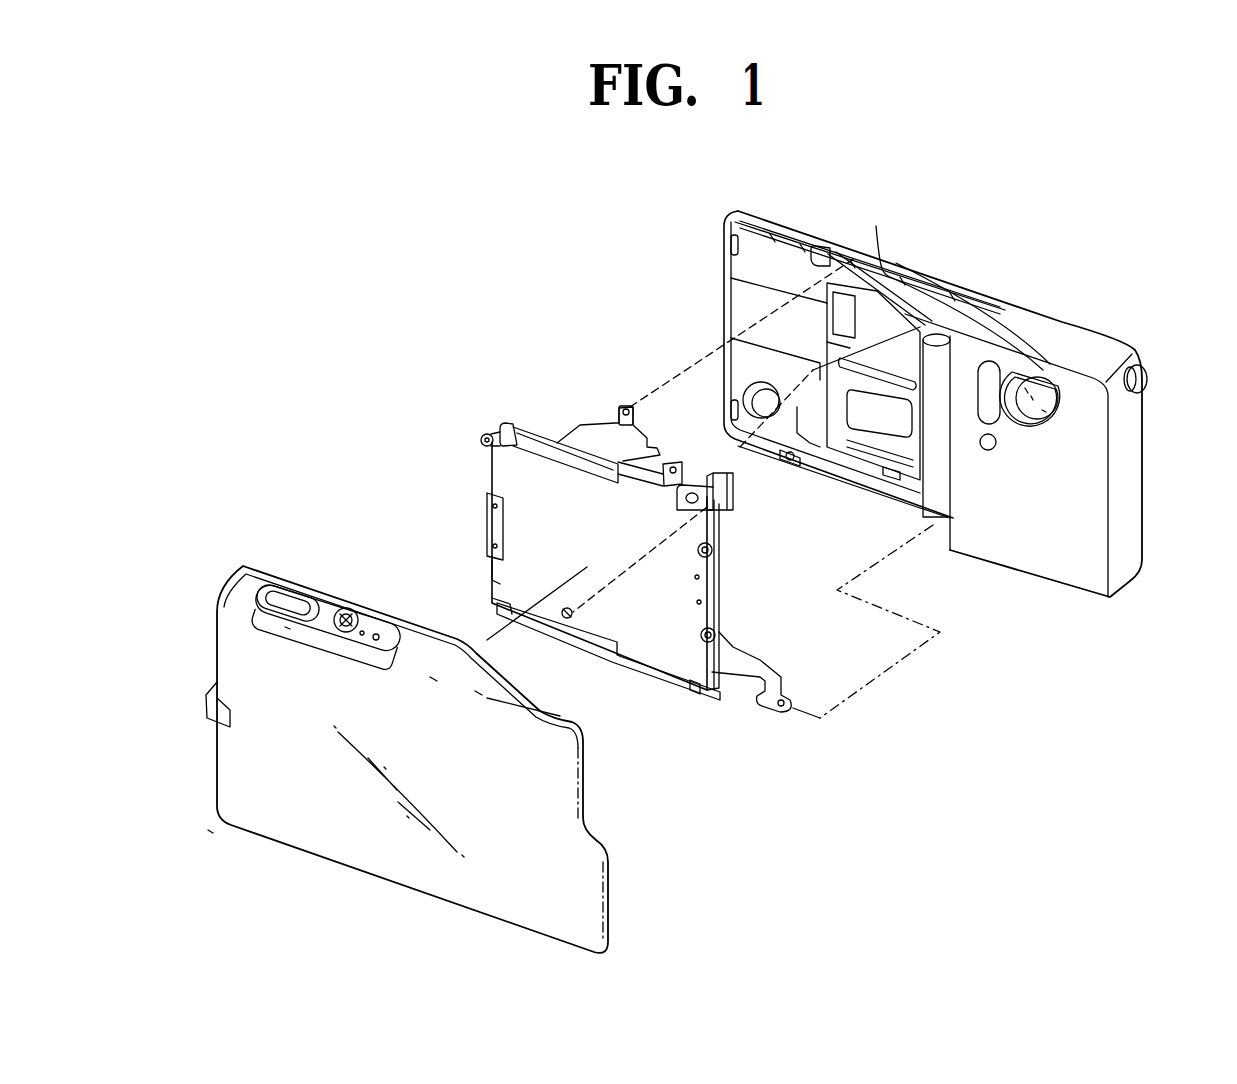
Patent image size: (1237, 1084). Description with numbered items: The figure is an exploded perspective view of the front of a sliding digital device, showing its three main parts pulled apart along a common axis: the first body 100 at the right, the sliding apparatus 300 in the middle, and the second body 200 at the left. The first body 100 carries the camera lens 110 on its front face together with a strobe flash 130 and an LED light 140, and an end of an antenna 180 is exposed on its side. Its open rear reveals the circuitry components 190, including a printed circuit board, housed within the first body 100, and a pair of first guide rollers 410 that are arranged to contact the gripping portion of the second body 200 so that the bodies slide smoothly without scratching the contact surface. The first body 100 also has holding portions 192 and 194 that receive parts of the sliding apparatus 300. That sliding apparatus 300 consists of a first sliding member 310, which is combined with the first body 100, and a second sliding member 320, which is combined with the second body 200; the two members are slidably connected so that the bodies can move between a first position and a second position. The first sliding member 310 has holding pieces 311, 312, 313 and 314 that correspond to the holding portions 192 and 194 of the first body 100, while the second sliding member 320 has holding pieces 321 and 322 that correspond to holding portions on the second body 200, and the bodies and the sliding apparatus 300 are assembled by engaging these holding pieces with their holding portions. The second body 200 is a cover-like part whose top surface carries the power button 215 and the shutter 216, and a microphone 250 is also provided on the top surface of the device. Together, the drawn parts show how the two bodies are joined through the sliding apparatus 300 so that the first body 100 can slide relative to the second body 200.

The first body 100 is at (1027, 298).
The lens 110 is at (1037, 428).
The strobe flash 130 is at (983, 398).
The LED light 140 is at (988, 451).
The antenna 180 is at (1148, 376).
The circuitry components 190 is at (866, 352).
The holding portion 192 is at (820, 246).
The holding portion 194 is at (793, 463).
The second body 200 is at (323, 866).
The power button 215 is at (347, 611).
The shutter 216 is at (293, 591).
The microphone 250 is at (377, 635).
The sliding apparatus 300 is at (473, 428).
The first sliding member 310 is at (582, 417).
The holding piece 311 is at (727, 486).
The holding piece 312 is at (627, 405).
The holding piece 313 is at (782, 706).
The holding piece 314 is at (568, 618).
The second sliding member 320 is at (648, 664).
The holding piece 321 is at (676, 464).
The holding piece 322 is at (481, 444).
The first guide rollers 410 is at (733, 410).